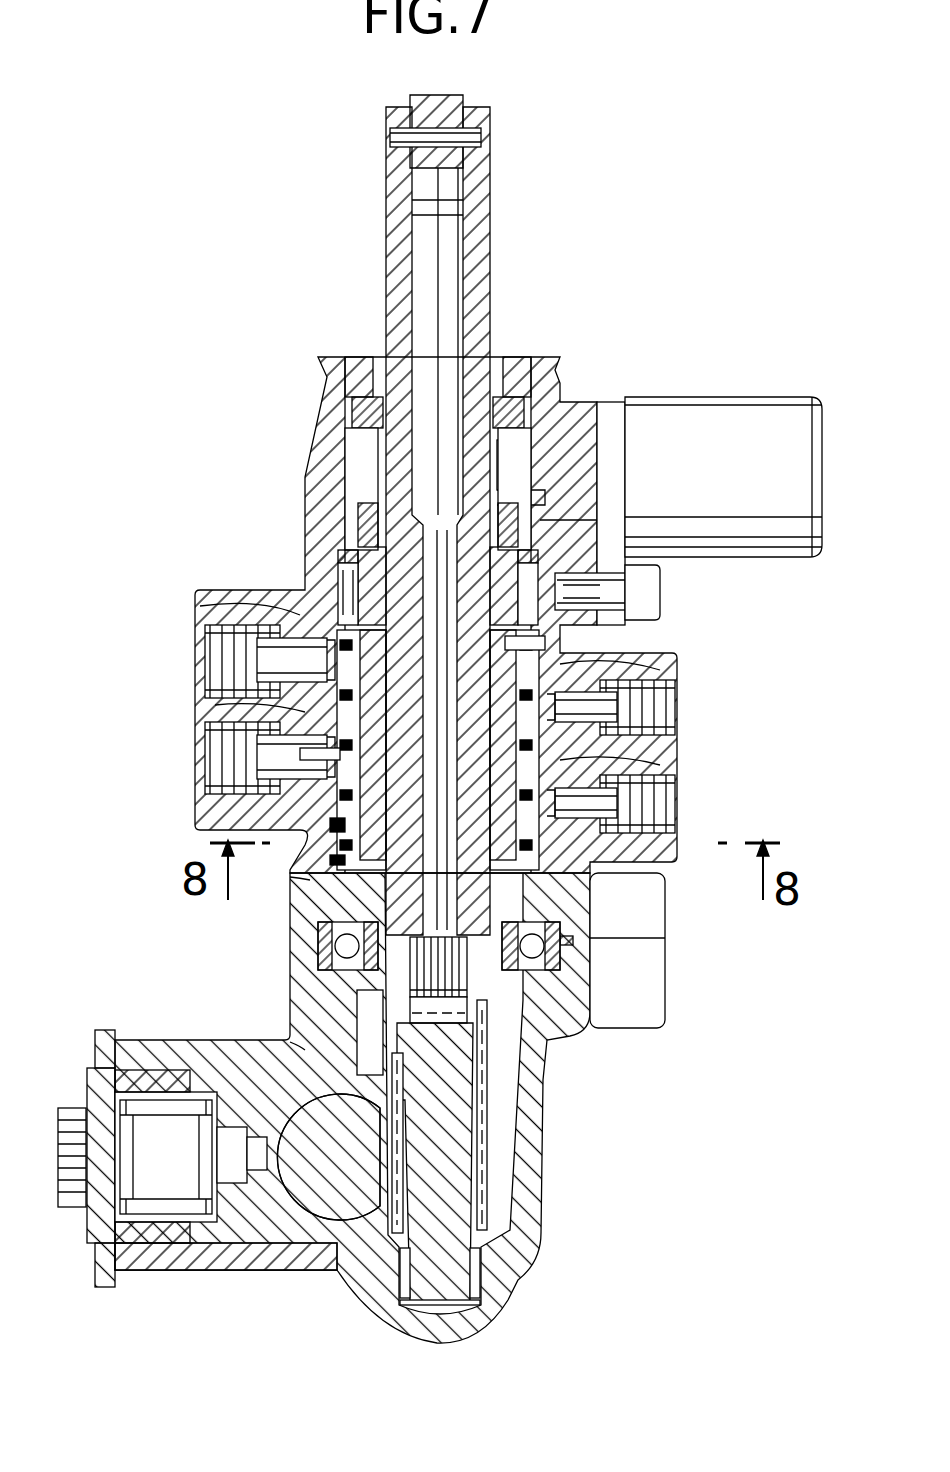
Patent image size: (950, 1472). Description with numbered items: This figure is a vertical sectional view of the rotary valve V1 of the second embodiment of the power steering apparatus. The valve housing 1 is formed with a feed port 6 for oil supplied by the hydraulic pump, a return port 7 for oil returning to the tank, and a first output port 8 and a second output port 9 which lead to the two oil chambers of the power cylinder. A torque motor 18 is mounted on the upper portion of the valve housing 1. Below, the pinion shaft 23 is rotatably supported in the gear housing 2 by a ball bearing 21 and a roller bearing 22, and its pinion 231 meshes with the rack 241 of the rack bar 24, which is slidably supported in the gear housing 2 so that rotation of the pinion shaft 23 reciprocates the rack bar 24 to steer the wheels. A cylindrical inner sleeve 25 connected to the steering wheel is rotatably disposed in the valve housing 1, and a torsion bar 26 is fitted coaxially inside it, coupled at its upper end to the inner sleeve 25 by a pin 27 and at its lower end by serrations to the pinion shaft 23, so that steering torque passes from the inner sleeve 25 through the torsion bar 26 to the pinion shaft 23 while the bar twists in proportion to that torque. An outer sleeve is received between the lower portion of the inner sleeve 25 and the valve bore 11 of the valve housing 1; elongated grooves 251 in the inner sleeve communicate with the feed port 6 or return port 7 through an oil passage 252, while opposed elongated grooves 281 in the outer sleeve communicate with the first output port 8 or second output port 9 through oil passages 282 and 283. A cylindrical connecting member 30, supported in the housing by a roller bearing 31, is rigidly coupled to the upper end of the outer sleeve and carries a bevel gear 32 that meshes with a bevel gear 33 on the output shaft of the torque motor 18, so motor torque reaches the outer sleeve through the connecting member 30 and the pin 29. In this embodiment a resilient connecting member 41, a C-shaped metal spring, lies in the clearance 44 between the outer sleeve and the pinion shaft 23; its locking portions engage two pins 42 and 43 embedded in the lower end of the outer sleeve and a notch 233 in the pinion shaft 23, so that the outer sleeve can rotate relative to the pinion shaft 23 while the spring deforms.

The valve housing 1 is at (298, 500).
The gear housing 2 is at (280, 1003).
The feed port 6 is at (205, 780).
The return port 7 is at (205, 665).
The first output port 8 is at (667, 725).
The second output port 9 is at (660, 833).
The valve bore 11 is at (533, 650).
The torque motor 18 is at (752, 490).
The ball bearing 21 is at (320, 950).
The roller bearing 22 is at (475, 1283).
The pinion shaft 23 is at (495, 1105).
The pinion 231 is at (483, 1190).
The notch 233 is at (290, 877).
The rack bar 24 is at (345, 1225).
The rack 241 is at (290, 1040).
The inner sleeve 25 is at (492, 297).
The elongated grooves 251 is at (345, 753).
The oil passage 252 is at (587, 527).
The torsion bar 26 is at (441, 270).
The pin 27 is at (483, 138).
The elongated grooves 281 is at (250, 710).
The oil passage 282 is at (625, 668).
The oil passage 283 is at (623, 767).
The pin 29 is at (325, 625).
The connecting member 30 is at (365, 425).
The roller bearing 31 is at (355, 580).
The bevel gear 32 is at (358, 468).
The bevel gear 33 is at (520, 440).
The resilient connecting member 41 is at (577, 860).
The pin 42 is at (330, 825).
The pin 43 is at (337, 860).
The clearance 44 is at (547, 907).
The rotary valve V1 is at (245, 585).